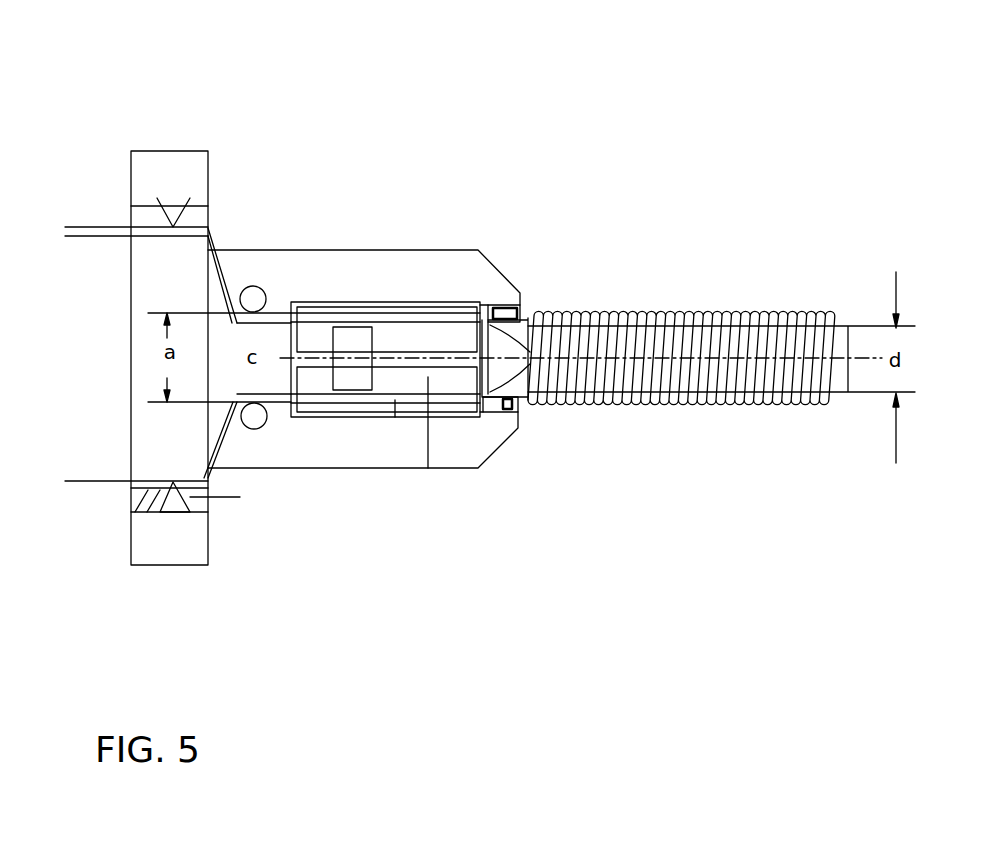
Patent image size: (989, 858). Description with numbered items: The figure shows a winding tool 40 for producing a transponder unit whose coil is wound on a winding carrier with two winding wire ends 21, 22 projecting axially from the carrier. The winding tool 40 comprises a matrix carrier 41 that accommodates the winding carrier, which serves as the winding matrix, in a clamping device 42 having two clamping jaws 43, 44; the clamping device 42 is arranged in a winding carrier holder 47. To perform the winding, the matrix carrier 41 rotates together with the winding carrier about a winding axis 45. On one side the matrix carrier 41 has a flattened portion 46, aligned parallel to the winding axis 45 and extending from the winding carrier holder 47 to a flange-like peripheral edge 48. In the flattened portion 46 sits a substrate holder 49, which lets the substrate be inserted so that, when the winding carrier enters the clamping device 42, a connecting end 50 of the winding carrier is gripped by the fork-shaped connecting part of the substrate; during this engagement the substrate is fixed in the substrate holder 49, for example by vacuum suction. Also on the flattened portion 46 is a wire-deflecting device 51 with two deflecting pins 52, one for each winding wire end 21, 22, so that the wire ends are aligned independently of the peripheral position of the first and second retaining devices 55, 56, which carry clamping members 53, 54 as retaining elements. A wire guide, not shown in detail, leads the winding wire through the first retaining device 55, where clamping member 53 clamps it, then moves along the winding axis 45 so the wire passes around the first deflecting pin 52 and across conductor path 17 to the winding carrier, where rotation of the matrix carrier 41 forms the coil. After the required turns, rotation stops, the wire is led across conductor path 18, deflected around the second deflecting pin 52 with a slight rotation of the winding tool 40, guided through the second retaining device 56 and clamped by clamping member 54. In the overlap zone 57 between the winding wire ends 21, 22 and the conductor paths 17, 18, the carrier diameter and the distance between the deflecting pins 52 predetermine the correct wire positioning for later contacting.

The conductor path 17 is at (393, 338).
The conductor path 18 is at (428, 468).
The winding wire end 21 is at (410, 303).
The winding wire end 22 is at (395, 417).
The winding tool 40 is at (346, 110).
The matrix carrier 41 is at (380, 203).
The clamping device 42 is at (525, 233).
The clamping jaw 43 is at (508, 313).
The clamping jaw 44 is at (513, 418).
The winding axis 45 is at (868, 393).
The flattened portion 46 is at (380, 448).
The winding carrier holder 47 is at (545, 250).
The peripheral edge 48 is at (188, 560).
The substrate holder 49 is at (440, 310).
The connecting end 50 is at (502, 373).
The wire-deflecting device 51 is at (283, 263).
The deflecting pin 52 is at (277, 442).
The clamping member 53 is at (187, 223).
The clamping member 54 is at (150, 490).
The first retaining device 55 is at (176, 105).
The second retaining device 56 is at (240, 497).
The overlap zone 57 is at (322, 487).